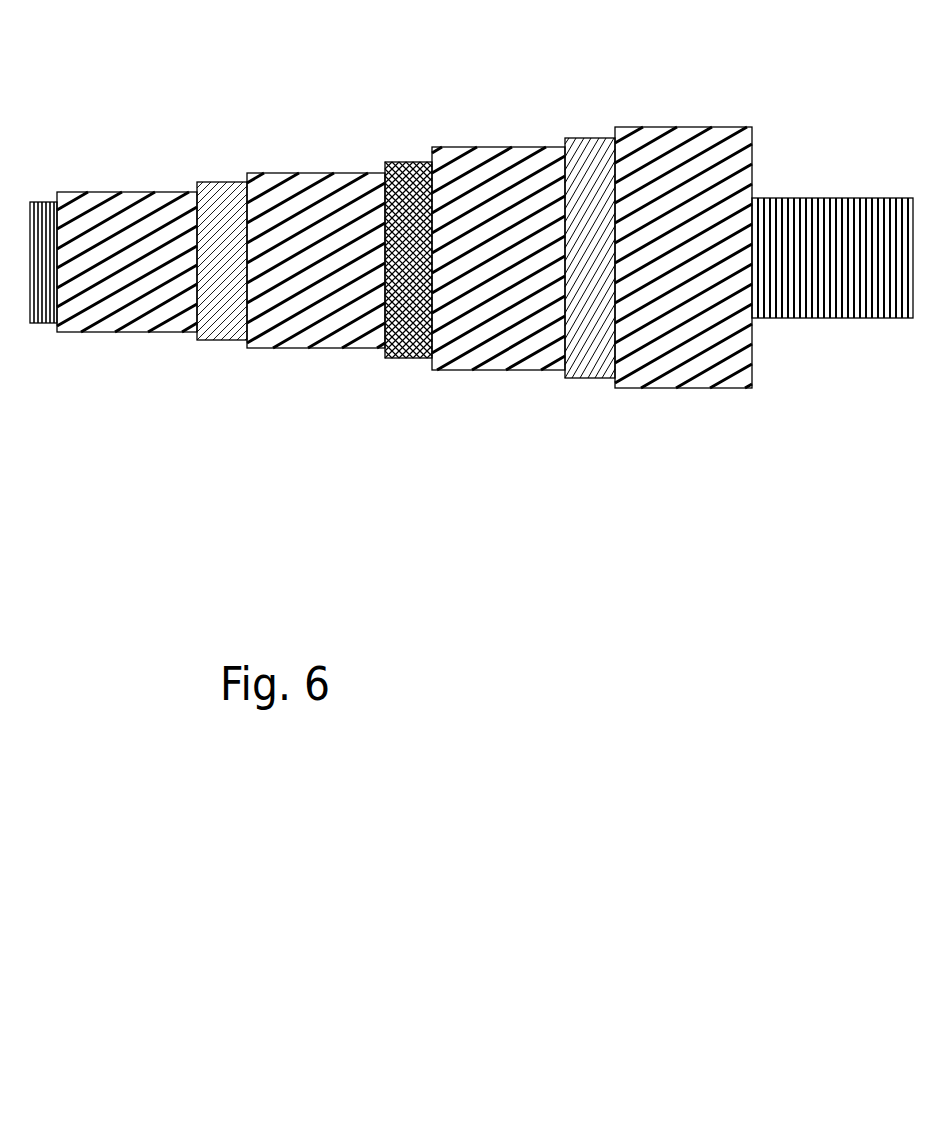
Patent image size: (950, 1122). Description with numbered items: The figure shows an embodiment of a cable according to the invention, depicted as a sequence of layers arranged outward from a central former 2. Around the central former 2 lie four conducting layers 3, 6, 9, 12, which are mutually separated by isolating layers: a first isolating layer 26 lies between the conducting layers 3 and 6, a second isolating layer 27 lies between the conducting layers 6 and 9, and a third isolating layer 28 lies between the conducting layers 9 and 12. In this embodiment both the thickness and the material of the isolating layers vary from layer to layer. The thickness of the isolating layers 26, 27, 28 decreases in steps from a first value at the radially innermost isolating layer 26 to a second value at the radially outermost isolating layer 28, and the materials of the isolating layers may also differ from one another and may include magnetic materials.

The central former 2 is at (47, 248).
The conducting layer 3 is at (131, 205).
The first isolating layer 26 is at (220, 200).
The conducting layer 6 is at (316, 200).
The second isolating layer 27 is at (408, 187).
The conducting layer 9 is at (493, 167).
The third isolating layer 28 is at (593, 167).
The conducting layer 12 is at (687, 138).